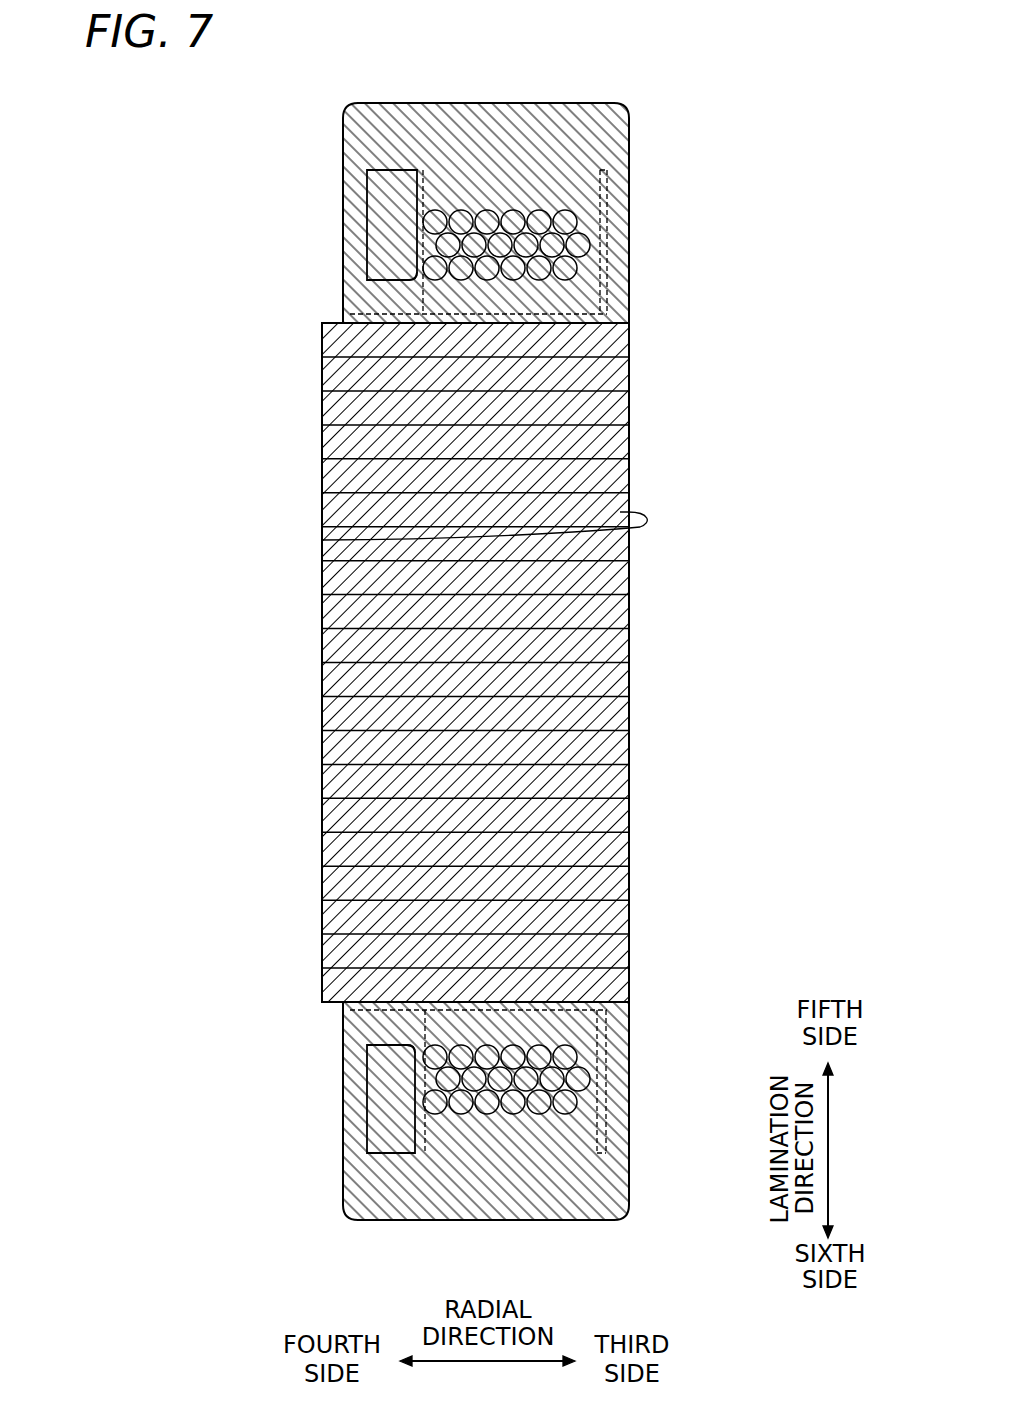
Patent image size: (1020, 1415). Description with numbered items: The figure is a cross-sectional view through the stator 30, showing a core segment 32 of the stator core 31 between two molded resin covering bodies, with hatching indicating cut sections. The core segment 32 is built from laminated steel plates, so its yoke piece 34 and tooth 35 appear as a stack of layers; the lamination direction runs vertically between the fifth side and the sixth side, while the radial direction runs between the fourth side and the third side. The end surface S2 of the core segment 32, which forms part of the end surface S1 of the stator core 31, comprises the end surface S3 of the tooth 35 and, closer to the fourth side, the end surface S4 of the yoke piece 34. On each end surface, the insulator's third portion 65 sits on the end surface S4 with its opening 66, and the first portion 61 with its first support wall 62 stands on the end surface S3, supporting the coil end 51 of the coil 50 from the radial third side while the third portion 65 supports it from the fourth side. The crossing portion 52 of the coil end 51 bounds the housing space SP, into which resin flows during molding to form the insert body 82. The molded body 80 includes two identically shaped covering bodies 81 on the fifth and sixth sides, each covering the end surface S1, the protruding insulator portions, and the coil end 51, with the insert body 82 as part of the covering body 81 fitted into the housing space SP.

The stator 30 is at (690, 78).
The stator core 31 is at (634, 472).
The core segment 32 is at (228, 492).
The yoke piece 34 is at (322, 513).
The tooth 35 is at (322, 540).
The coil 50 is at (546, 182).
The coil end 51 is at (501, 196).
The crossing portion 52 is at (506, 662).
The first portion 61 is at (613, 268).
The first support wall 62 is at (603, 170).
The third portion 65 is at (393, 170).
The opening 66 is at (377, 291).
The molded body 80 is at (338, 100).
The covering body 81 is at (393, 103).
The insert body 82 is at (466, 283).
The end surface of the stator core S1 is at (540, 252).
The end surface of the core segment S2 is at (228, 275).
The end surface of the tooth S3 is at (476, 318).
The end surface of the yoke piece S4 is at (356, 317).
The housing space SP is at (515, 286).